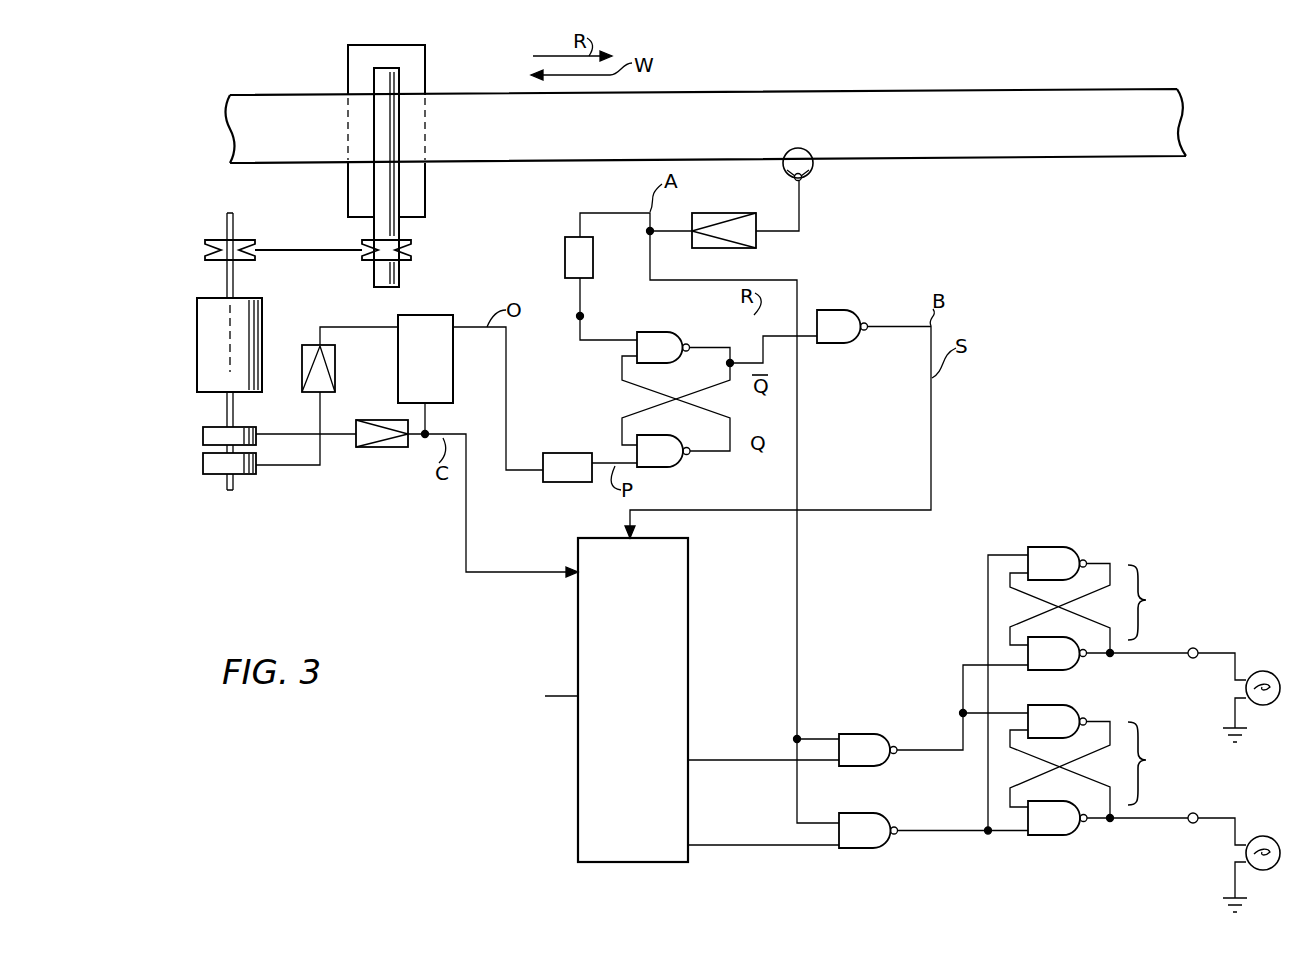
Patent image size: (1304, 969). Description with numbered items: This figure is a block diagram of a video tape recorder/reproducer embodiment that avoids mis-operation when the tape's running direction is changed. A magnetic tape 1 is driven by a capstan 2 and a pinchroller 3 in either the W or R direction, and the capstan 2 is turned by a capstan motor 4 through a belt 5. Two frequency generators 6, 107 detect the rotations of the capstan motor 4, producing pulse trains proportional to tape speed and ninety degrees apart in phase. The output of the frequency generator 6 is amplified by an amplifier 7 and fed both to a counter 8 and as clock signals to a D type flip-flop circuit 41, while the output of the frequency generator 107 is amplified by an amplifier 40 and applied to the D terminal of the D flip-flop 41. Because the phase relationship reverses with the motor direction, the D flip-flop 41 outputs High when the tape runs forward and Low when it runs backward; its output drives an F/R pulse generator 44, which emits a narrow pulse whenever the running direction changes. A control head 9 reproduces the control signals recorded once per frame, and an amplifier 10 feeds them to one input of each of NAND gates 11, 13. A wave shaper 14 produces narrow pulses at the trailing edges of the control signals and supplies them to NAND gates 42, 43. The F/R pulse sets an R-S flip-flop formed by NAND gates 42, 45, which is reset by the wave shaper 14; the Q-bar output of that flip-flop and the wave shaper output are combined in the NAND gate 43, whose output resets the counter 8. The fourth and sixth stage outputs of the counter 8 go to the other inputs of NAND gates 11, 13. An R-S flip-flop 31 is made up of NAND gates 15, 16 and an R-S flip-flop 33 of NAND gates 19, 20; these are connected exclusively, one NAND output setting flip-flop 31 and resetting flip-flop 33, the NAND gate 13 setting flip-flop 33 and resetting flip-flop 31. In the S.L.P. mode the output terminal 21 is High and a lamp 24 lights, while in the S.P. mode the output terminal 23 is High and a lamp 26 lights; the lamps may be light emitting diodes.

The magnetic tape 1 is at (998, 88).
The capstan 2 is at (400, 235).
The pinchroller 3 is at (418, 57).
The capstan motor 4 is at (197, 351).
The belt 5 is at (315, 249).
The frequency generator 6 is at (203, 435).
The amplifier 7 is at (398, 448).
The counter 8 is at (578, 626).
The control head 9 is at (812, 171).
The amplifier 10 is at (757, 246).
The NAND gate 11 is at (866, 738).
The NAND gate 13 is at (853, 842).
The wave shaper 14 is at (565, 252).
The NAND gate 15 is at (1052, 548).
The NAND gate 16 is at (1058, 661).
The NAND gate 19 is at (1080, 712).
The NAND gate 20 is at (1062, 826).
The output terminal 21 is at (1193, 647).
The output terminal 23 is at (1193, 811).
The lamp 24 is at (1262, 671).
The lamp 26 is at (1260, 841).
The R-S flip-flop 31 is at (1154, 602).
The R-S flip-flop 33 is at (1155, 763).
The amplifier 40 is at (308, 345).
The D type flip-flop circuit 41 is at (431, 315).
The NAND gate 42 is at (637, 349).
The NAND gate 43 is at (833, 310).
The F/R pulse generator 44 is at (578, 453).
The NAND gate 45 is at (665, 456).
The frequency generator 107 is at (215, 471).